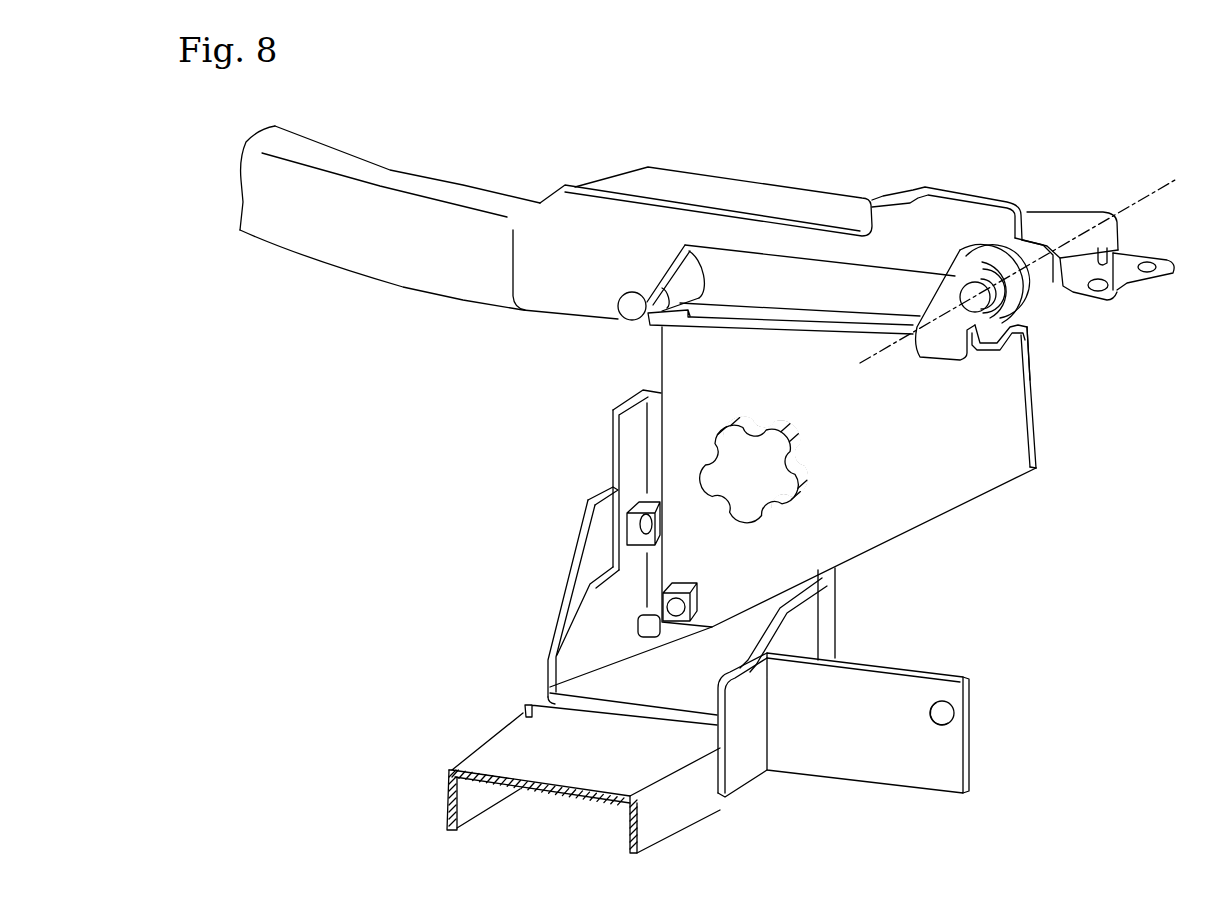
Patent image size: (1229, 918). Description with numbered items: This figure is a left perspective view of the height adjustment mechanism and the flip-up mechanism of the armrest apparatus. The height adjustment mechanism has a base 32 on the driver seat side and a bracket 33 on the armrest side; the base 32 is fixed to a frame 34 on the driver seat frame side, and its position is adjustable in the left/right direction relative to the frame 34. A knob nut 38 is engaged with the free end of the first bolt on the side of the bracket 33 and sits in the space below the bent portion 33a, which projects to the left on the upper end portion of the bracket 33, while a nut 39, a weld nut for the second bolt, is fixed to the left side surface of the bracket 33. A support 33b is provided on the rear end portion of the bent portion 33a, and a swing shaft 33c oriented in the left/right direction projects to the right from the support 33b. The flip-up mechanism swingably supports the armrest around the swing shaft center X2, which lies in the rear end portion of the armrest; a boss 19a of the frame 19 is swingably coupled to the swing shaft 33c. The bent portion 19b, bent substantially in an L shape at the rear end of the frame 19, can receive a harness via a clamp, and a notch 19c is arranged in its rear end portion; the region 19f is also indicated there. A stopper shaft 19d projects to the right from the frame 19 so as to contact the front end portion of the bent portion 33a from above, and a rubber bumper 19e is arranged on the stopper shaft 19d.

The frame 19 is at (338, 237).
The boss 19a is at (1037, 263).
The bent portion 19b is at (1127, 242).
The notch 19c is at (1133, 277).
The stopper shaft 19d is at (627, 310).
The rubber bumper 19e is at (690, 273).
The bracket slot 19f is at (1105, 255).
The swing shaft center X2 is at (1033, 265).
The base 32 is at (608, 455).
The bracket 33 is at (948, 487).
The bent portion 33a is at (1003, 357).
The support 33b is at (1027, 277).
The swing shaft 33c is at (973, 290).
The frame 34 is at (510, 753).
The knob nut 38 is at (773, 457).
The nut 39 is at (683, 620).